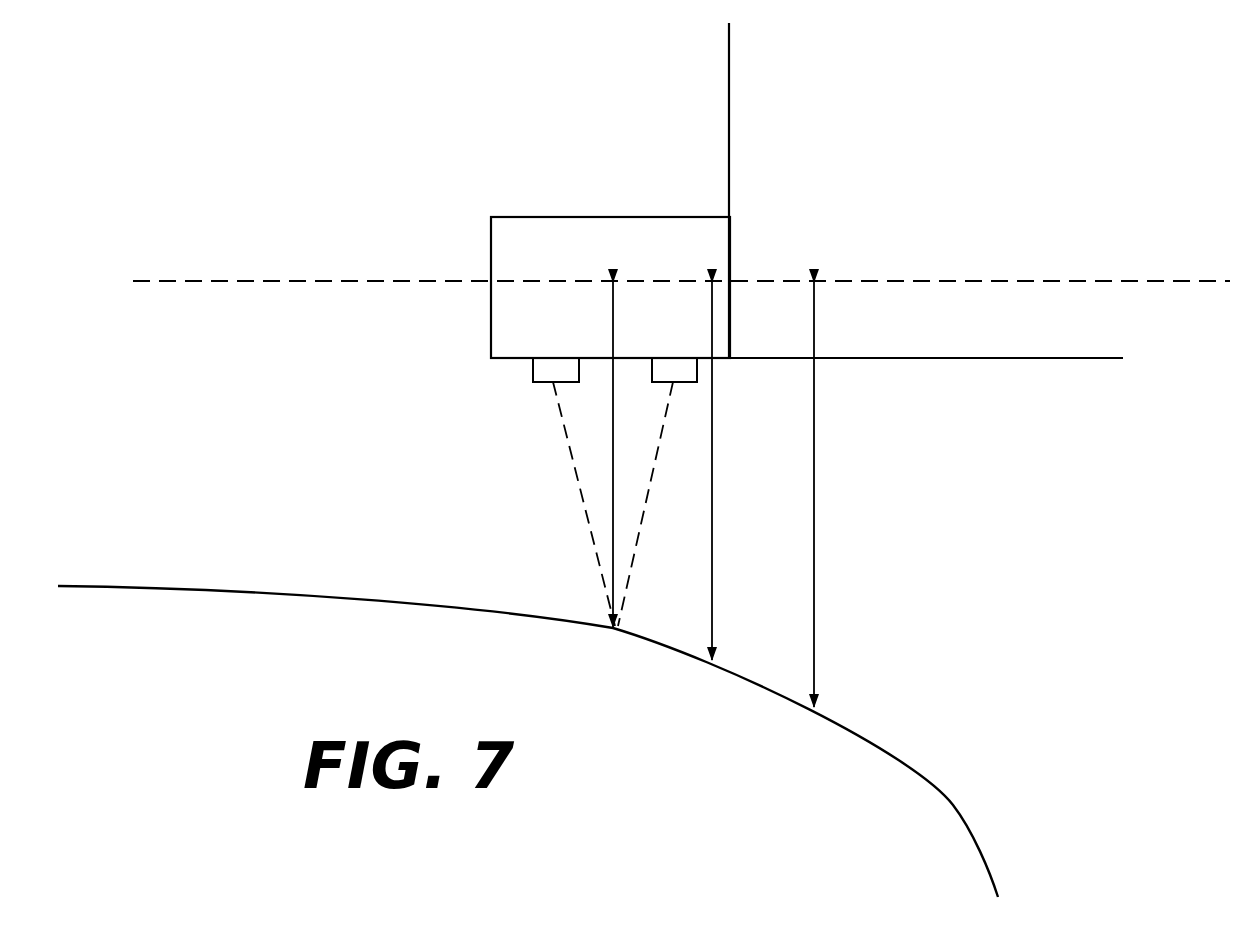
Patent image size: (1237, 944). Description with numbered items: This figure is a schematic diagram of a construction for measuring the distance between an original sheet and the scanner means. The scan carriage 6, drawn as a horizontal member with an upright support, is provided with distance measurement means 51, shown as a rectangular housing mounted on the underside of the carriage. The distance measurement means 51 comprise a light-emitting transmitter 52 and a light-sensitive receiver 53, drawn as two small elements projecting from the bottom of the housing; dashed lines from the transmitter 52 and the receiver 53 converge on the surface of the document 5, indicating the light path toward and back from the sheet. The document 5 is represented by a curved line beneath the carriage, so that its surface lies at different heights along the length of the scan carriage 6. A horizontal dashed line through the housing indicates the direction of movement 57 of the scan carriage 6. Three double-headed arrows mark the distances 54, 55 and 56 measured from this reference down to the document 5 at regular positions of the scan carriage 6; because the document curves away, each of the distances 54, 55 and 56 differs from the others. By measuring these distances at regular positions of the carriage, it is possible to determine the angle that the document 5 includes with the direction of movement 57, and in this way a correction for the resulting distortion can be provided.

The document 5 is at (953, 805).
The scan carriage 6 is at (955, 358).
The distance measurement means 51 is at (522, 217).
The light-emitting transmitter 52 is at (533, 372).
The light-sensitive receiver 53 is at (699, 366).
The distance 54 is at (613, 455).
The distance 55 is at (712, 455).
The distance 56 is at (814, 453).
The direction of movement 57 is at (218, 282).